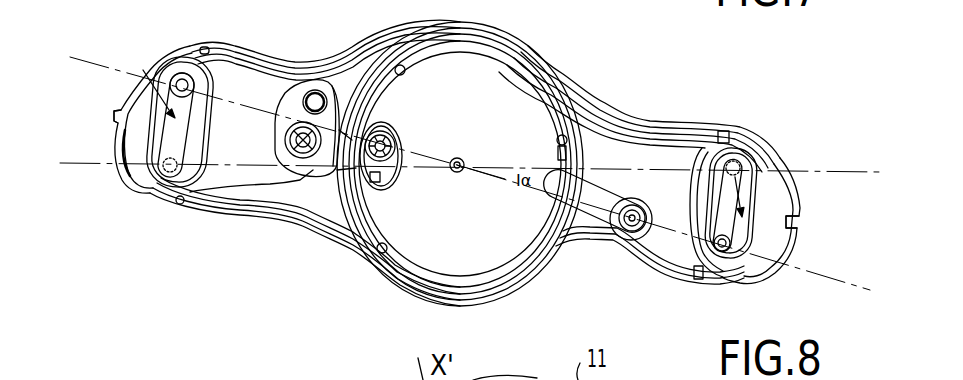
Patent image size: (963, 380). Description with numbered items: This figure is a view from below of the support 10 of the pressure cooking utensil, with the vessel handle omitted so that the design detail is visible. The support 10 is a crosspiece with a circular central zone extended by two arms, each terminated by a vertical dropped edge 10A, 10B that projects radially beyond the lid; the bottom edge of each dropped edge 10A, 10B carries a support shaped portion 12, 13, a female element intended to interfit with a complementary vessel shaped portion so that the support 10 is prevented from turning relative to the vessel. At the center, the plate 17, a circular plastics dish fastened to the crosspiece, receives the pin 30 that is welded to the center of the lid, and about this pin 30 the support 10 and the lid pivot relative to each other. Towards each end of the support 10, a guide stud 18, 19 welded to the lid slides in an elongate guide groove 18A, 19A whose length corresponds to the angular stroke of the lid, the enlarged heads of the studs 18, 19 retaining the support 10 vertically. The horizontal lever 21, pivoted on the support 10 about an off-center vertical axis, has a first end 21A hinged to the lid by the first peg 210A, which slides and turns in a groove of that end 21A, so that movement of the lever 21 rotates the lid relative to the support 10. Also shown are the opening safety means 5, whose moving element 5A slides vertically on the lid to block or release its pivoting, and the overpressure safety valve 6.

The opening safety means 5 is at (282, 90).
The moving element 5A is at (318, 90).
The overpressure safety valve 6 is at (385, 128).
The support 10 is at (598, 110).
The dropped edge 10A is at (784, 197).
The dropped edge 10B is at (117, 176).
The support shaped portion 12 is at (809, 222).
The support shaped portion 13 is at (108, 112).
The plate 17 is at (442, 240).
The guide stud 18 is at (723, 252).
The guide groove 18A is at (744, 222).
The guide stud 19 is at (187, 56).
The guide groove 19A is at (137, 58).
The horizontal lever 21 is at (663, 198).
The first end of the horizontal lever 21A is at (595, 175).
The first peg 210A is at (631, 235).
The pin 30 is at (463, 172).